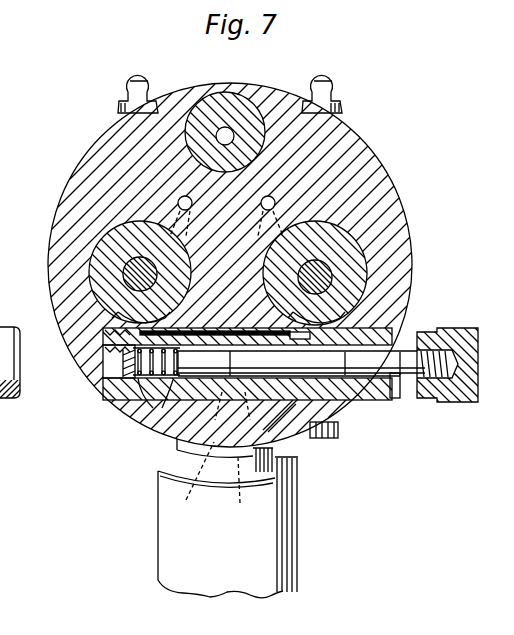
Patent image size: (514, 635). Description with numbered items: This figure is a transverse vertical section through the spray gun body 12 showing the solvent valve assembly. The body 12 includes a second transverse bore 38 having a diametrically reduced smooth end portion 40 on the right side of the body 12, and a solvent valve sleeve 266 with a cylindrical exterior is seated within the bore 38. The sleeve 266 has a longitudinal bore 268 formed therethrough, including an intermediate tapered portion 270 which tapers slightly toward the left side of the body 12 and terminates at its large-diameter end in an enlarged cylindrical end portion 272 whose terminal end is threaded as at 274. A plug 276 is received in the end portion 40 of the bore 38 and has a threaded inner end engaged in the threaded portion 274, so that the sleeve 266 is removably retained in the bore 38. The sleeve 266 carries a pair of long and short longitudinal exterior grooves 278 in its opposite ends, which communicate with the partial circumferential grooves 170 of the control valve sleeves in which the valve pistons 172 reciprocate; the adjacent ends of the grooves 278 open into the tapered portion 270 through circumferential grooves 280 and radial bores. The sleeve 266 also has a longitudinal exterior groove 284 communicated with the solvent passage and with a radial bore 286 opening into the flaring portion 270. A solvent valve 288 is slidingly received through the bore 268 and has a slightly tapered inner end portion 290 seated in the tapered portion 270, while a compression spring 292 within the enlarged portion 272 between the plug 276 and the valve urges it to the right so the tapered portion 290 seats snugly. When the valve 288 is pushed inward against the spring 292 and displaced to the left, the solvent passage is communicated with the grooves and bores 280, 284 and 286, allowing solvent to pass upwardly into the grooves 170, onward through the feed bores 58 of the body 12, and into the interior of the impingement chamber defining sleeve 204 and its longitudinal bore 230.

The body 12 is at (372, 152).
The second transverse bore 38 is at (290, 440).
The diametrically reduced smooth end portion 40 is at (50, 316).
The feed bore 58 is at (178, 200).
The partial circumferential groove 170 is at (229, 259).
The valve piston 172 is at (132, 266).
The impingement chamber defining sleeve 204 is at (229, 110).
The longitudinal bore 230 is at (221, 128).
The solvent valve sleeve 266 is at (352, 386).
The longitudinal bore 268 is at (377, 374).
The intermediate tapered portion 270 is at (248, 332).
The enlarged cylindrical end portion 272 is at (135, 385).
The threaded portion 274 is at (117, 367).
The plug 276 is at (98, 358).
The longitudinal exterior grooves 278 is at (190, 323).
The circumferential grooves 280 is at (301, 363).
The longitudinal groove 284 is at (388, 305).
The radial bore 286 is at (228, 527).
The solvent valve 288 is at (400, 370).
The slightly tapered inner end portion 290 is at (222, 393).
The compression spring 292 is at (150, 395).